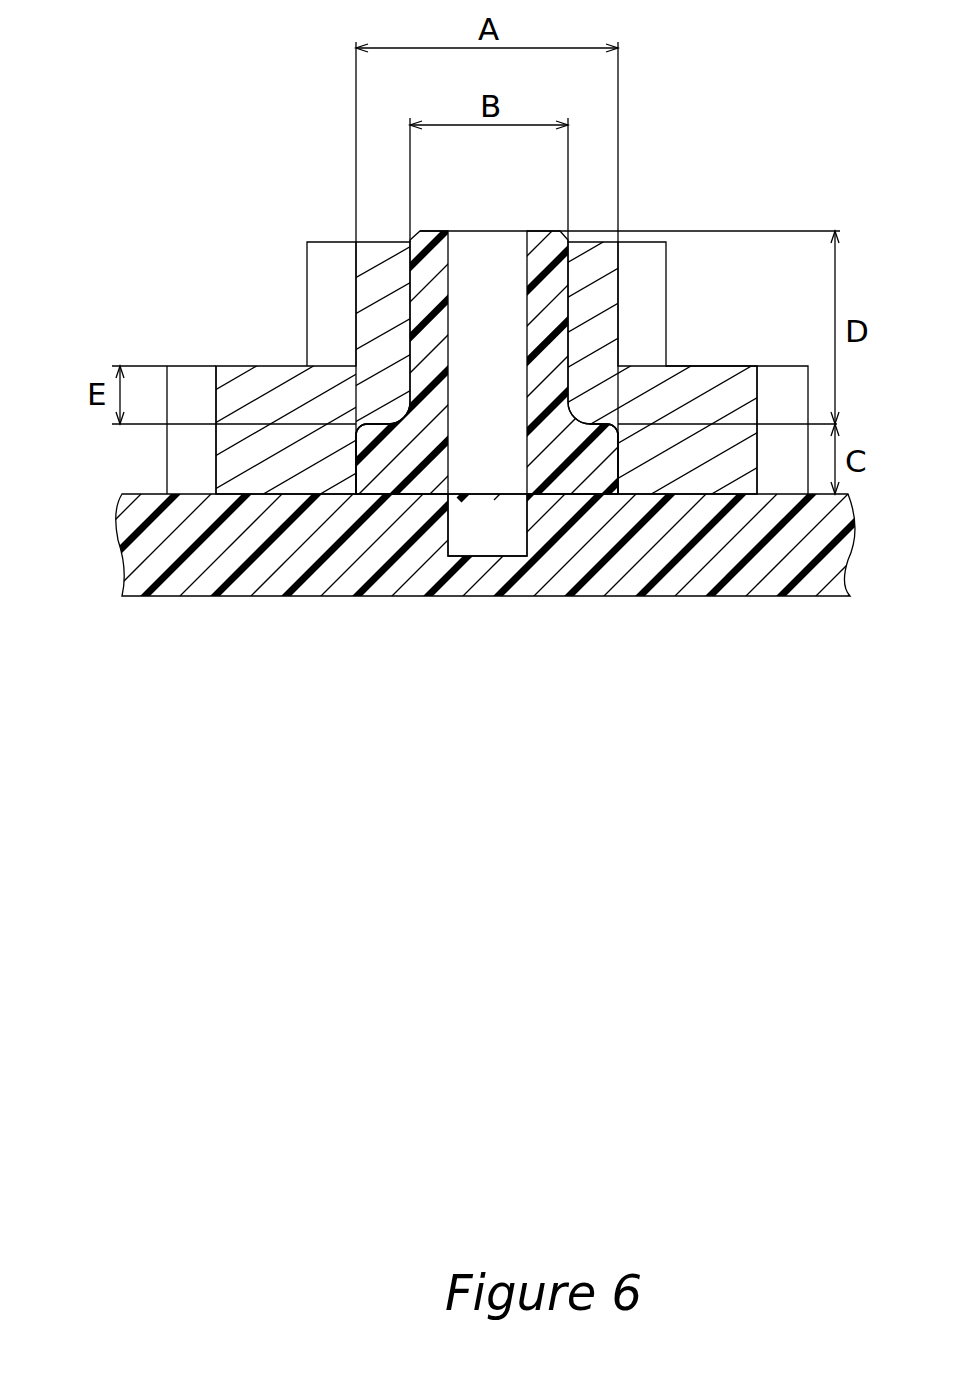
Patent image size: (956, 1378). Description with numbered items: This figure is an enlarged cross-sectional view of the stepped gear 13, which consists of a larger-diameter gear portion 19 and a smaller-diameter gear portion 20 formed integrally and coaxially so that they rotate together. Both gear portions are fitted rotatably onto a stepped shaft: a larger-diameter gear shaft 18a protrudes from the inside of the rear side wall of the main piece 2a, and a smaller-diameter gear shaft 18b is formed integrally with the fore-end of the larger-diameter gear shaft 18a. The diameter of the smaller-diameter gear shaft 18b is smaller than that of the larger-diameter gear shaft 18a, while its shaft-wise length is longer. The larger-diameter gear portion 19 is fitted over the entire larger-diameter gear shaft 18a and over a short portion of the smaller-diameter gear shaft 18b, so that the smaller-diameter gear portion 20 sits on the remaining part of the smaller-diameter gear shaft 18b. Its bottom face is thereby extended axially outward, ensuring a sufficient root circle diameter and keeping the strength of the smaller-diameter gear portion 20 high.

The main piece 2a is at (633, 572).
The stepped gear 13 is at (264, 326).
The larger-diameter gear shaft 18a is at (385, 458).
The smaller-diameter gear shaft 18b is at (421, 314).
The larger-diameter gear portion 19 is at (197, 397).
The smaller-diameter gear portion 20 is at (337, 260).